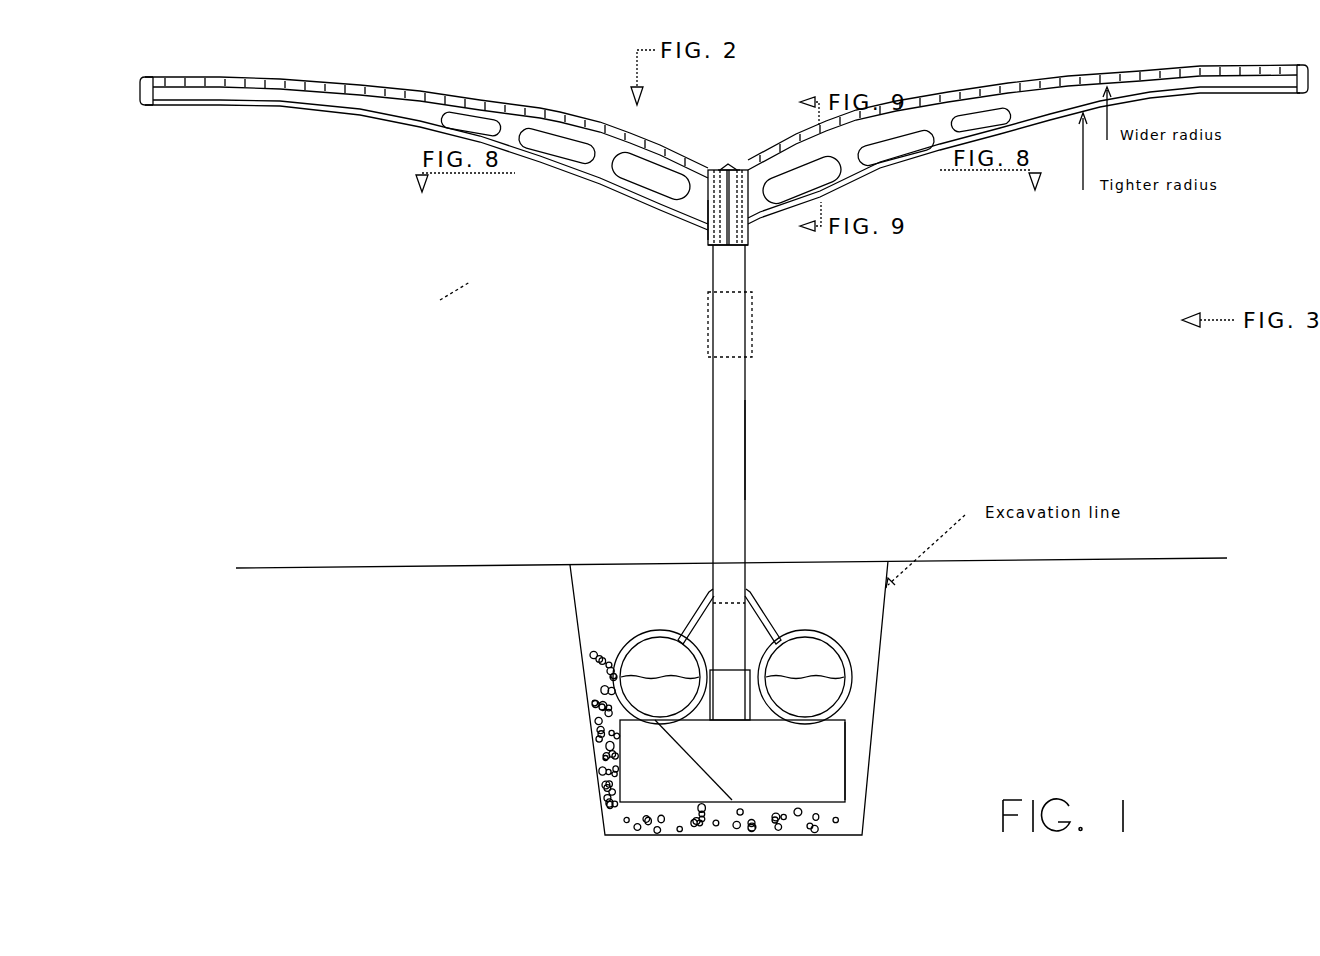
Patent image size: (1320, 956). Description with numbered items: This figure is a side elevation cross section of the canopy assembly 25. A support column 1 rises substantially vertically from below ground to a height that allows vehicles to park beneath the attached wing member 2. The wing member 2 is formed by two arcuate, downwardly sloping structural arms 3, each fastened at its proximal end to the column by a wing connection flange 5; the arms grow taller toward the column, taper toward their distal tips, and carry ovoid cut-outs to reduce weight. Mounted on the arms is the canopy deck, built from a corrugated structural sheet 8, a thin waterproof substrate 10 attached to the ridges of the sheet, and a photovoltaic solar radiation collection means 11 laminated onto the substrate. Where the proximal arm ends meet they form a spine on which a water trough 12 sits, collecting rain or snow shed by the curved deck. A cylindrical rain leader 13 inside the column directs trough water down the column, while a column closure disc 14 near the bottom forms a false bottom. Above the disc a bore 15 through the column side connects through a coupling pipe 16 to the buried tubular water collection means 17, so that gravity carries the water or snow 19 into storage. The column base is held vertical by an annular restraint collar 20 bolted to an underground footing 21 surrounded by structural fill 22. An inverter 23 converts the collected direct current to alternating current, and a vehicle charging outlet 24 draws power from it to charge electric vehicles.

The support column 1 is at (708, 428).
The wing member 2 is at (374, 164).
The wing structural arm 3 is at (316, 116).
The wing connection flange 5 is at (708, 240).
The corrugated structural sheet 8 is at (540, 108).
The substrate 10 is at (494, 95).
The solar radiation collection means 11 is at (446, 84).
The water trough 12 is at (734, 165).
The rain leader 13 is at (700, 214).
The column closure disc 14 is at (752, 580).
The bore 15 is at (710, 590).
The coupling pipe 16 is at (684, 634).
The water collection means 17 is at (818, 625).
The water or snow 19 is at (850, 665).
The annular restraint collar 20 is at (757, 707).
The underground footing 21 is at (848, 735).
The structural fill 22 is at (582, 700).
The inverter 23 is at (755, 330).
The vehicle charging outlet 24 is at (752, 445).
The canopy assembly 25 is at (488, 269).